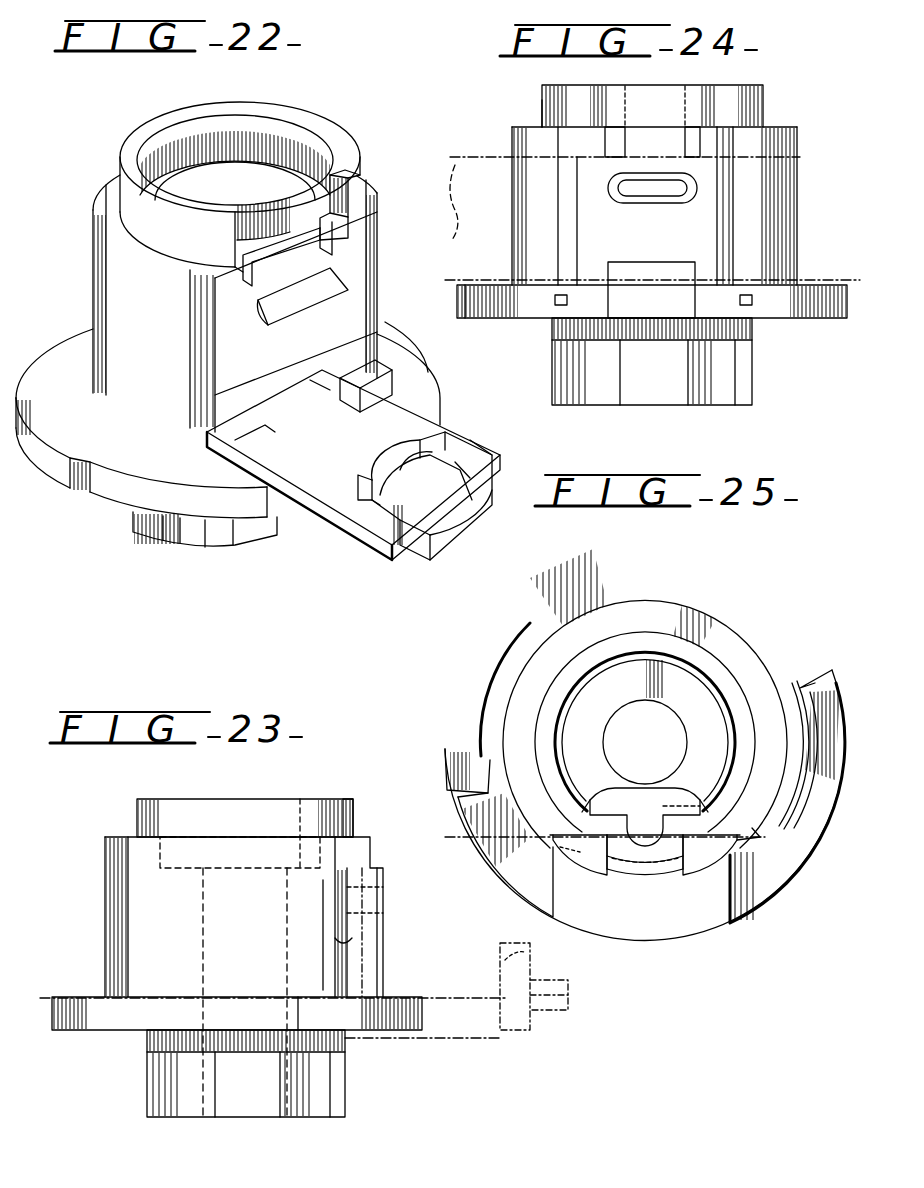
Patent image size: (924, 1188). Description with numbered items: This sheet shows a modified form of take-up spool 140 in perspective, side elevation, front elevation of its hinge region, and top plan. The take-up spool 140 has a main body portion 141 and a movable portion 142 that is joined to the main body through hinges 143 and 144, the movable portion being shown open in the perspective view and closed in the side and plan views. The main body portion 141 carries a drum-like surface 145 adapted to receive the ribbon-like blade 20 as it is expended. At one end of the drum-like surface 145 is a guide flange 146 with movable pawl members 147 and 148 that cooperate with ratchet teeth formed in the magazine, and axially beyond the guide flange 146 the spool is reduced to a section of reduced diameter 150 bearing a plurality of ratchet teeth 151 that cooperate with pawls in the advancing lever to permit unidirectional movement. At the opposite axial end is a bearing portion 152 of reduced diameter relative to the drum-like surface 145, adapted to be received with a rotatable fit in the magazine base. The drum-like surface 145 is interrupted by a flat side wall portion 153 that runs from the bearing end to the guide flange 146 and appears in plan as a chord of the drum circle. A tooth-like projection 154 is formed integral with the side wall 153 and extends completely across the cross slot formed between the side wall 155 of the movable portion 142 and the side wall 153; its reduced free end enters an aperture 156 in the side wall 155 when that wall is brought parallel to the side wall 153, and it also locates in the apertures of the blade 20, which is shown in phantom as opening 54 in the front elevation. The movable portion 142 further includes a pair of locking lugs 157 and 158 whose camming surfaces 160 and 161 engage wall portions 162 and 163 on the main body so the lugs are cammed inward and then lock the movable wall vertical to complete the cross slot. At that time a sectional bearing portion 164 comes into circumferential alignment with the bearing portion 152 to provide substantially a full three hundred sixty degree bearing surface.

In FIG. 24, the ribbon-like blade 20 is at (473, 178).
In FIG. 25, the ribbon-like blade 20 is at (493, 840).
In FIG. 23, the ribbon-like blade 20 is at (349, 975).
In FIG. 24, the slot opening 54 is at (679, 195).
In FIG. 22, the take-up spool 140 is at (334, 114).
In FIG. 24, the take-up spool 140 is at (802, 111).
In FIG. 25, the take-up spool 140 is at (811, 889).
In FIG. 23, the take-up spool 140 is at (100, 821).
In FIG. 22, the main body portion 141 is at (363, 189).
In FIG. 24, the main body portion 141 is at (535, 134).
In FIG. 22, the movable portion 142 is at (461, 425).
In FIG. 23, the movable portion 142 is at (479, 1033).
In FIG. 22, the hinge 143 is at (241, 441).
In FIG. 24, the hinge 143 is at (596, 307).
In FIG. 22, the hinge 144 is at (361, 391).
In FIG. 24, the hinge 144 is at (716, 297).
In FIG. 22, the drum-like surface 145 is at (103, 243).
In FIG. 24, the drum-like surface 145 is at (792, 150).
In FIG. 23, the drum-like surface 145 is at (108, 893).
In FIG. 22, the guide flange 146 is at (143, 503).
In FIG. 24, the guide flange 146 is at (809, 315).
In FIG. 25, the guide flange 146 is at (702, 564).
In FIG. 23, the guide flange 146 is at (79, 1018).
In FIG. 22, the pawl member 147 is at (65, 483).
In FIG. 24, the pawl member 147 is at (461, 303).
In FIG. 25, the pawl member 147 is at (459, 750).
In FIG. 23, the pawl member 147 is at (251, 1015).
In FIG. 22, the pawl member 148 is at (379, 325).
In FIG. 25, the pawl member 148 is at (837, 690).
In FIG. 22, the section of reduced diameter 150 is at (226, 548).
In FIG. 24, the section of reduced diameter 150 is at (673, 395).
In FIG. 23, the section of reduced diameter 150 is at (189, 1109).
In FIG. 22, the ratchet teeth 151 is at (171, 533).
In FIG. 24, the ratchet teeth 151 is at (598, 398).
In FIG. 23, the ratchet teeth 151 is at (309, 1107).
In FIG. 22, the bearing portion 152 is at (279, 113).
In FIG. 24, the bearing portion 152 is at (760, 95).
In FIG. 25, the bearing portion 152 is at (672, 614).
In FIG. 23, the bearing portion 152 is at (191, 809).
In FIG. 22, the flat side wall portion 153 is at (218, 351).
In FIG. 25, the flat side wall portion 153 is at (567, 847).
In FIG. 23, the flat side wall portion 153 is at (348, 873).
In FIG. 22, the tooth-like projection 154 is at (313, 300).
In FIG. 25, the tooth-like projection 154 is at (663, 874).
In FIG. 23, the tooth-like projection 154 is at (371, 901).
In FIG. 22, the side wall 155 is at (421, 421).
In FIG. 25, the side wall 155 is at (744, 841).
In FIG. 23, the side wall 155 is at (346, 935).
In FIG. 22, the aperture 156 is at (379, 479).
In FIG. 24, the aperture 156 is at (626, 203).
In FIG. 23, the aperture 156 is at (388, 895).
In FIG. 22, the locking lug 157 is at (411, 491).
In FIG. 25, the locking lug 157 is at (627, 799).
In FIG. 23, the locking lug 157 is at (299, 808).
In FIG. 22, the locking lug 158 is at (471, 476).
In FIG. 25, the locking lug 158 is at (686, 792).
In FIG. 22, the camming surface 160 is at (380, 504).
In FIG. 25, the camming surface 160 is at (596, 802).
In FIG. 22, the camming surface 161 is at (485, 446).
In FIG. 25, the camming surface 161 is at (694, 804).
In FIG. 22, the wall portion 162 is at (251, 269).
In FIG. 24, the wall portion 162 is at (608, 143).
In FIG. 25, the wall portion 162 is at (614, 864).
In FIG. 22, the wall portion 163 is at (324, 229).
In FIG. 24, the wall portion 163 is at (701, 148).
In FIG. 25, the wall portion 163 is at (692, 857).
In FIG. 22, the sectional bearing portion 164 is at (446, 549).
In FIG. 24, the sectional bearing portion 164 is at (658, 103).
In FIG. 25, the sectional bearing portion 164 is at (644, 872).
In FIG. 23, the sectional bearing portion 164 is at (348, 801).